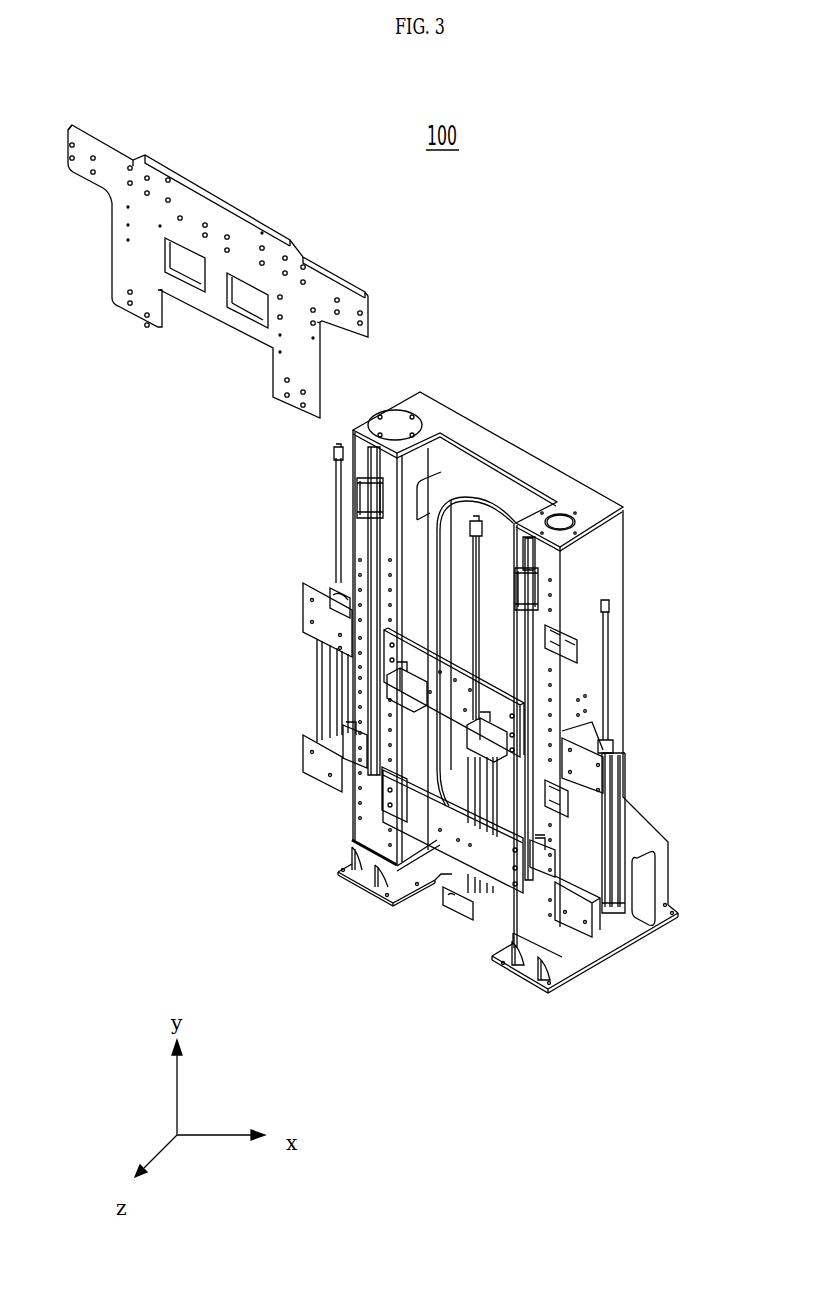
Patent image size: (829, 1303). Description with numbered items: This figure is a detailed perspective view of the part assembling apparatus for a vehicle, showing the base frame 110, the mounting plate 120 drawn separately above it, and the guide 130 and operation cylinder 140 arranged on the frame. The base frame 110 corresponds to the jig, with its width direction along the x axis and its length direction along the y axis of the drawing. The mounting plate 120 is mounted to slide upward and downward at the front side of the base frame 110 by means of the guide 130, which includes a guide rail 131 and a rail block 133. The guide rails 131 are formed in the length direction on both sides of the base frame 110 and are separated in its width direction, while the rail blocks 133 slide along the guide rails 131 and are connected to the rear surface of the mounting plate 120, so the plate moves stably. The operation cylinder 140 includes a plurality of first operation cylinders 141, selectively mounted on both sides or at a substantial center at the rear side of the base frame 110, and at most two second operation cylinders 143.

The base frame 110 is at (598, 549).
The mounting plate 120 is at (128, 262).
The guide 130 is at (543, 663).
The guide rail 131 is at (535, 556).
The rail block 133 is at (577, 636).
The operation cylinder 140 is at (529, 760).
The first operation cylinder 141 is at (543, 843).
The second operation cylinder 143 is at (617, 805).